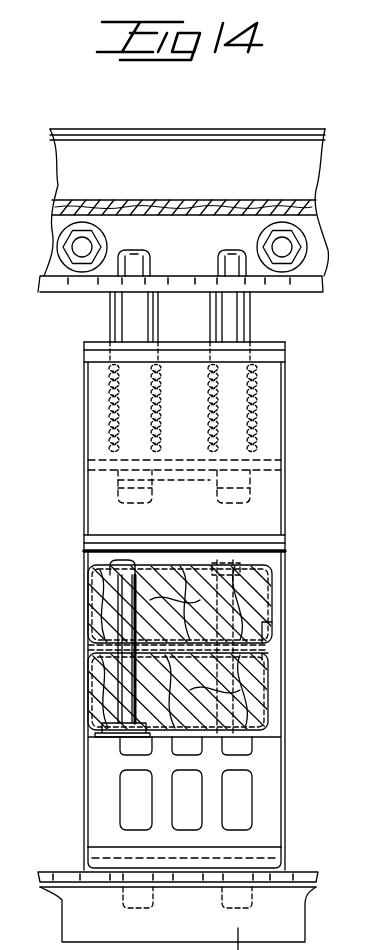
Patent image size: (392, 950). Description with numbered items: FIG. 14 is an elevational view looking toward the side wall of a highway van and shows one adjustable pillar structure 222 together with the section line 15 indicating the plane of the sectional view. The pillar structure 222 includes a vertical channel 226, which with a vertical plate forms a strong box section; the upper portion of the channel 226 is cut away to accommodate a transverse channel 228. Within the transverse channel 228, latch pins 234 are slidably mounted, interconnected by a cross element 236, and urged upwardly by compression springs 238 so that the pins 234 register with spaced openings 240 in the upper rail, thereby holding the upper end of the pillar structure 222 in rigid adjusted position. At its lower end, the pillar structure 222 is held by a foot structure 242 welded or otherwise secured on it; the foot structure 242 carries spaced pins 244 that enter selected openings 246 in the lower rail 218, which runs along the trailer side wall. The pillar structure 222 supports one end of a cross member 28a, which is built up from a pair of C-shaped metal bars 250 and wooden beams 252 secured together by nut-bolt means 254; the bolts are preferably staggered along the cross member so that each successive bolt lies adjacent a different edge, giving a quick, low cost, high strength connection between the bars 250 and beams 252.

The section line 15 is at (190, 100).
The spaced openings 240 is at (172, 282).
The latch pins 234 is at (130, 323).
The compression springs 238 is at (258, 432).
The transverse channel 228 is at (272, 497).
The cross element 236 is at (168, 492).
The cross member 28a is at (262, 577).
The C-shaped metal bars 250 is at (85, 613).
The wooden beams 252 is at (258, 612).
The nut-bolt means 254 is at (240, 684).
The vertical channel 226 is at (268, 752).
The pillar structure 222 is at (291, 808).
The foot structure 242 is at (262, 851).
The openings 246 is at (290, 867).
The rail 218 is at (58, 878).
The spaced pins 244 is at (148, 905).